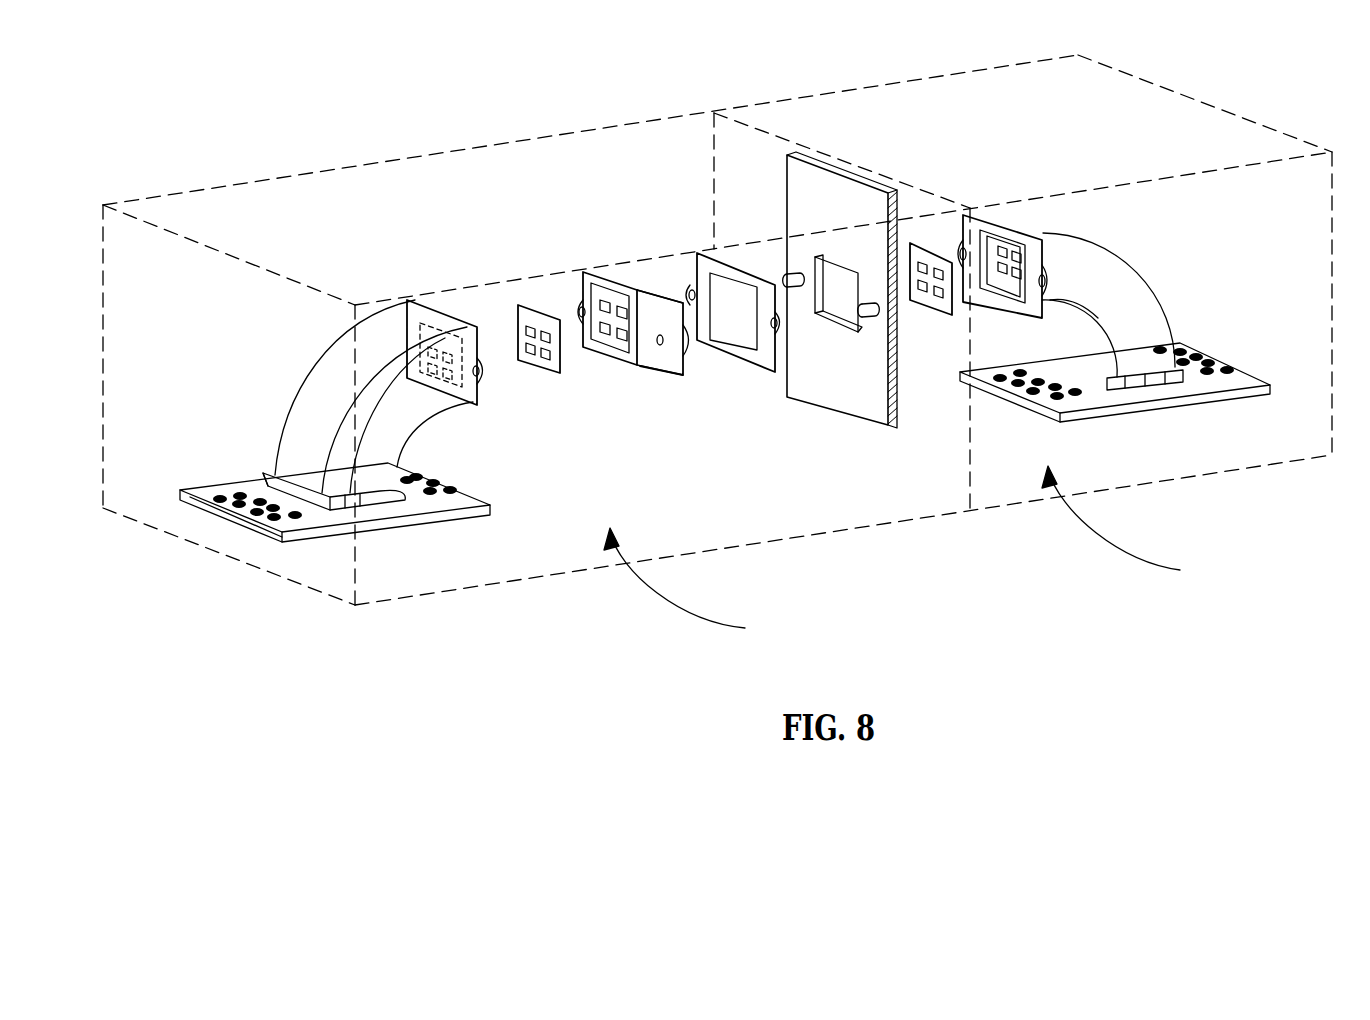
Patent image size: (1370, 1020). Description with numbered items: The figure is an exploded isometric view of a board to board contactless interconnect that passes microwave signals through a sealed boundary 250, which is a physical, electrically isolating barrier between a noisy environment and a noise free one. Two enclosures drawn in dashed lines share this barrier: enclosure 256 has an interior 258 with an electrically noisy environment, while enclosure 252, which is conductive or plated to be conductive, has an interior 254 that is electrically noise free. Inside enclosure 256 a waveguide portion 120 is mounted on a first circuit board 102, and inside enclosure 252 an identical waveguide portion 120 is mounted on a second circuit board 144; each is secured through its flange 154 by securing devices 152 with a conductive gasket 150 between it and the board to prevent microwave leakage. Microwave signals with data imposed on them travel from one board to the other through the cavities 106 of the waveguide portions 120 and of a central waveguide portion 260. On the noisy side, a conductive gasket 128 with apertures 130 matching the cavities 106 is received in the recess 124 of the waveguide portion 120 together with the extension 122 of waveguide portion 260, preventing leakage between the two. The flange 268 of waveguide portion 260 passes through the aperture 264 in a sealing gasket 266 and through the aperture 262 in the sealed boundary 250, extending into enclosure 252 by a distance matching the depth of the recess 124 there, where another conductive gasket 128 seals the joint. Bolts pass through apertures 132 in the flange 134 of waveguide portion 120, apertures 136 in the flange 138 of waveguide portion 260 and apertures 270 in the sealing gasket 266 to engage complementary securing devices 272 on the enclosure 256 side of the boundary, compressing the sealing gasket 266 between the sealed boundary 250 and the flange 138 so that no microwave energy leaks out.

The first circuit board 102 is at (230, 490).
The cavities 106 is at (420, 333).
The waveguide portion 120 is at (340, 373).
The extension 122 is at (658, 297).
The recess 124 is at (417, 330).
The conductive gasket 128 is at (525, 305).
The apertures 130 is at (545, 357).
The apertures 132 is at (473, 405).
The flange 134 is at (488, 372).
The apertures 136 is at (650, 348).
The flange 138 is at (673, 345).
The second circuit board 144 is at (1242, 372).
The conductive gasket 150 is at (300, 508).
The securing devices 152 is at (410, 490).
The flange 154 is at (397, 503).
The sealed boundary 250 is at (858, 292).
The enclosure 252 is at (955, 70).
The interior 254 is at (1137, 526).
The enclosure 256 is at (470, 150).
The interior 258 is at (700, 587).
The waveguide portion 260 is at (629, 313).
The aperture 262 is at (847, 307).
The aperture 264 is at (730, 318).
The sealing gasket 266 is at (733, 316).
The flange 268 is at (682, 297).
The apertures 270 is at (795, 288).
The securing devices 272 is at (877, 316).